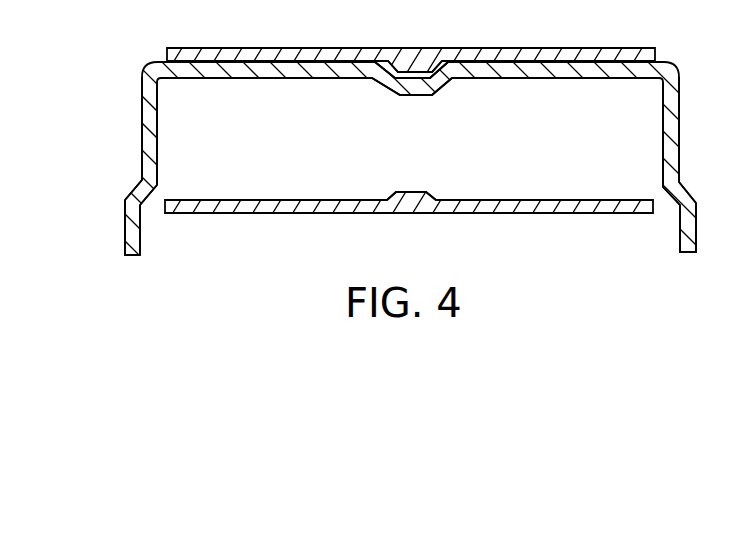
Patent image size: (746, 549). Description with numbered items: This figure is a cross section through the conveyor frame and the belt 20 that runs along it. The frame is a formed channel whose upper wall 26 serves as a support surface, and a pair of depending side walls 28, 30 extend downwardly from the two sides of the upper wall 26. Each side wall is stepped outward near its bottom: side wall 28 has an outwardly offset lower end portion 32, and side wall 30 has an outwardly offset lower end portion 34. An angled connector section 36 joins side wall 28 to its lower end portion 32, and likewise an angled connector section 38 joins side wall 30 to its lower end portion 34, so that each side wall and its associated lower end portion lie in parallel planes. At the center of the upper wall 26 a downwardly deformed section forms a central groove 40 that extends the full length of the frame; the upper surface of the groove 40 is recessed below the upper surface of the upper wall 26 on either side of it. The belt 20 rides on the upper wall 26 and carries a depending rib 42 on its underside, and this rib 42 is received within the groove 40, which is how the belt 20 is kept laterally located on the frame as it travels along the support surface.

The belt 20 is at (546, 42).
The upper wall 26 is at (289, 79).
The side wall 28 is at (141, 120).
The side wall 30 is at (680, 103).
The lower end portion 32 is at (125, 225).
The lower end portion 34 is at (697, 225).
The angled connector section 36 is at (142, 190).
The angled connector section 38 is at (685, 188).
The central groove 40 is at (422, 58).
The depending rib 42 is at (416, 74).